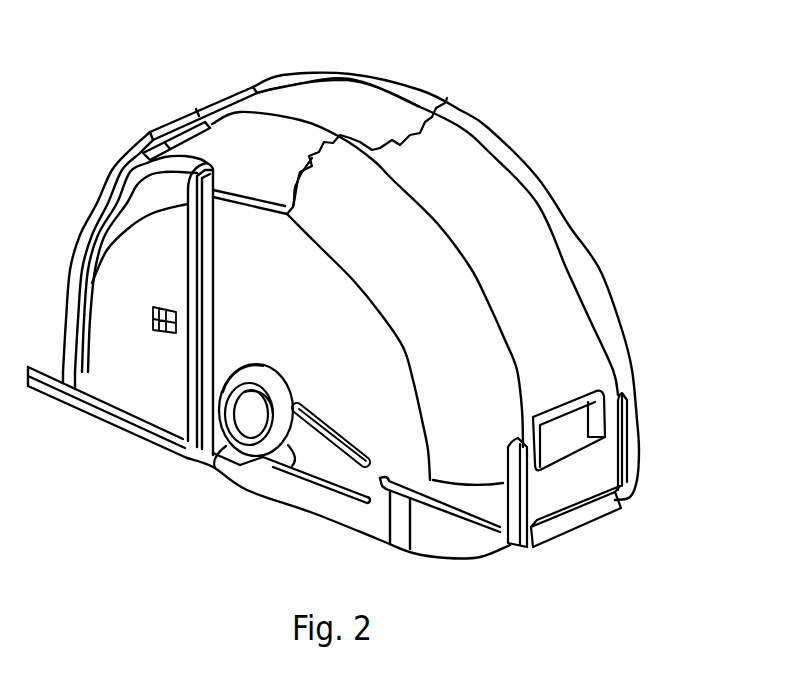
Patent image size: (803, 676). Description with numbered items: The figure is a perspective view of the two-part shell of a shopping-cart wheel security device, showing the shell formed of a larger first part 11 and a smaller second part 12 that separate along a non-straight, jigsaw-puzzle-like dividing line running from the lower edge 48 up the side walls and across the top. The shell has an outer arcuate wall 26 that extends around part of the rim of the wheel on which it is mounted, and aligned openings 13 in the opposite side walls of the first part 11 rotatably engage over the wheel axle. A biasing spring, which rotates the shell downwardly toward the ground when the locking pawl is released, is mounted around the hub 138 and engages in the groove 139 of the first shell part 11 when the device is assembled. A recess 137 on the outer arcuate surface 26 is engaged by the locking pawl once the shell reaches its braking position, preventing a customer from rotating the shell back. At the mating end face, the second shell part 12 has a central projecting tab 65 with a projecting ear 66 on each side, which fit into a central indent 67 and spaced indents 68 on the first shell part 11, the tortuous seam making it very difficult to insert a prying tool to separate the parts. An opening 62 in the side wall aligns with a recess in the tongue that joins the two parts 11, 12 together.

The first shell part 11 is at (355, 337).
The second shell part 12 is at (245, 150).
The openings 13 is at (263, 413).
The outer arcuate wall 26 is at (485, 212).
The lower edge 48 is at (142, 424).
The opening 62 is at (153, 327).
The central projecting tab 65 is at (373, 113).
The projecting ear 66 is at (275, 183).
The central indent 67 is at (422, 105).
The indents 68 is at (313, 155).
The recess 137 is at (577, 423).
The hub 138 is at (270, 450).
The groove 139 is at (324, 447).